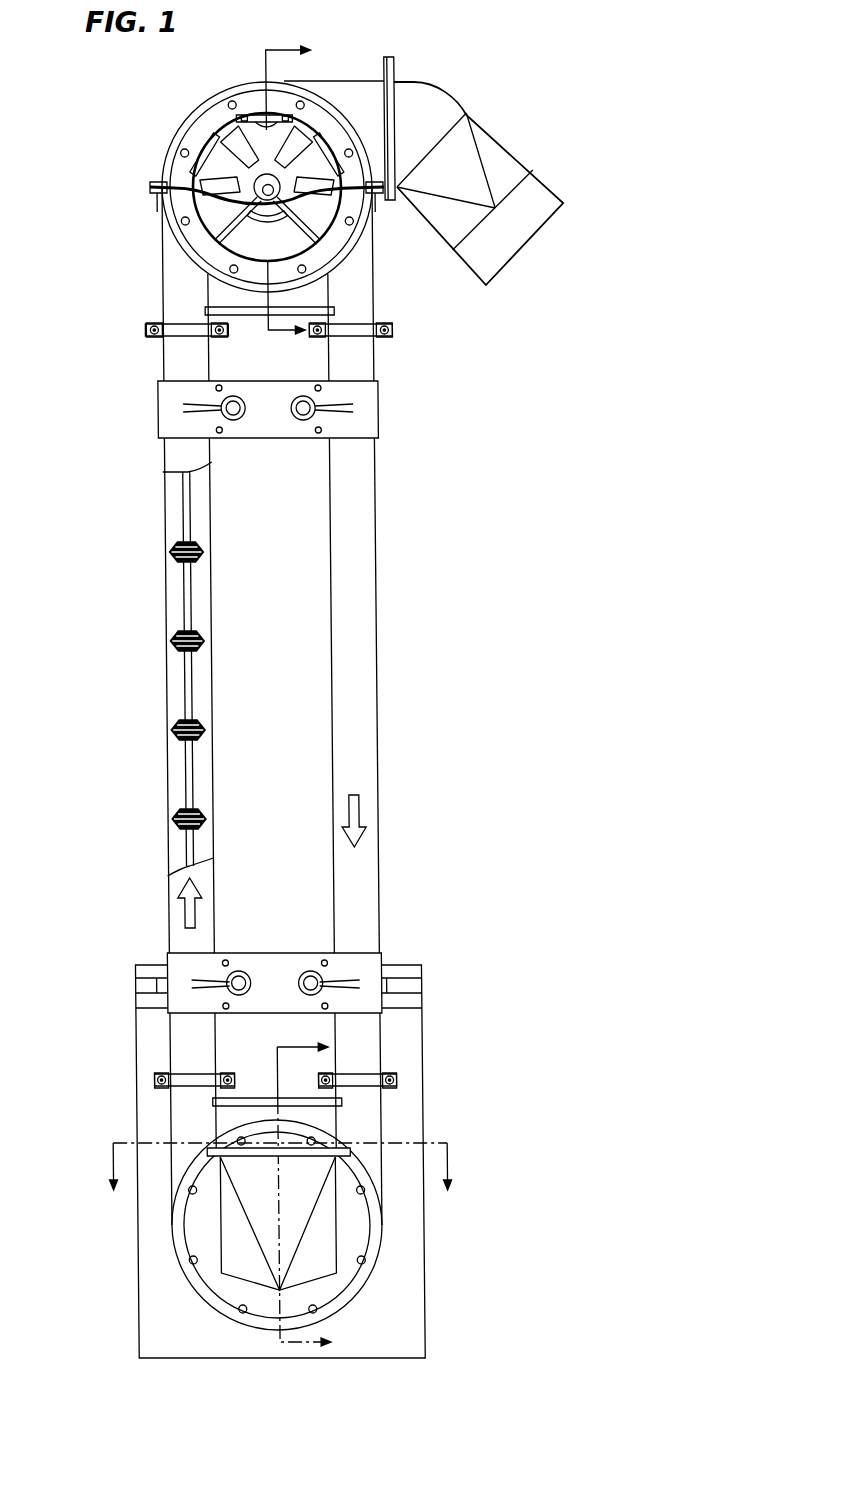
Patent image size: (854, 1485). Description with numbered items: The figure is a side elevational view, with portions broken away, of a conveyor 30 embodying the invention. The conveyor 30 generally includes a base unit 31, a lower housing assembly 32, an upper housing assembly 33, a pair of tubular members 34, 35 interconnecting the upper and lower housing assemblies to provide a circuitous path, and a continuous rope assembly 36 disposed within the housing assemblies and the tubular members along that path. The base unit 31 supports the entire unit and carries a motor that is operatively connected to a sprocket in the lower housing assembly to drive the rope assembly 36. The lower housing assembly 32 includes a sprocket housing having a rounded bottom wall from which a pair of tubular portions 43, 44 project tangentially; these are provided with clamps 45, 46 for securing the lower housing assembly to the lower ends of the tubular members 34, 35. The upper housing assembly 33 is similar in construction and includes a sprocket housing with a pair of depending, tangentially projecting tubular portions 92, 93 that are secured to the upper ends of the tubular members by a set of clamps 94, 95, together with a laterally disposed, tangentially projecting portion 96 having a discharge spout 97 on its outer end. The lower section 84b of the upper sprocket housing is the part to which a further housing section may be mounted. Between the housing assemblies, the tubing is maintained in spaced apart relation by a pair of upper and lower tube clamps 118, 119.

The conveyor 30 is at (96, 533).
The base unit 31 is at (118, 1046).
The lower housing assembly 32 is at (372, 1233).
The upper housing assembly 33 is at (162, 134).
The tubular member 34 is at (160, 708).
The tubular member 35 is at (373, 702).
The continuous rope assembly 36 is at (172, 600).
The tubular portion 43 is at (168, 1122).
The tubular portion 44 is at (375, 1127).
The clamp 45 is at (143, 1080).
The clamp 46 is at (391, 1080).
The lower section 84b is at (152, 194).
The tubular portion 92 is at (162, 292).
The tubular portion 93 is at (373, 305).
The clamp 94 is at (150, 338).
The clamp 95 is at (386, 338).
The laterally disposed, tangentially projecting portion 96 is at (357, 81).
The discharge spout 97 is at (507, 148).
The upper tube clamp 118 is at (270, 440).
The lower tube clamp 119 is at (270, 953).